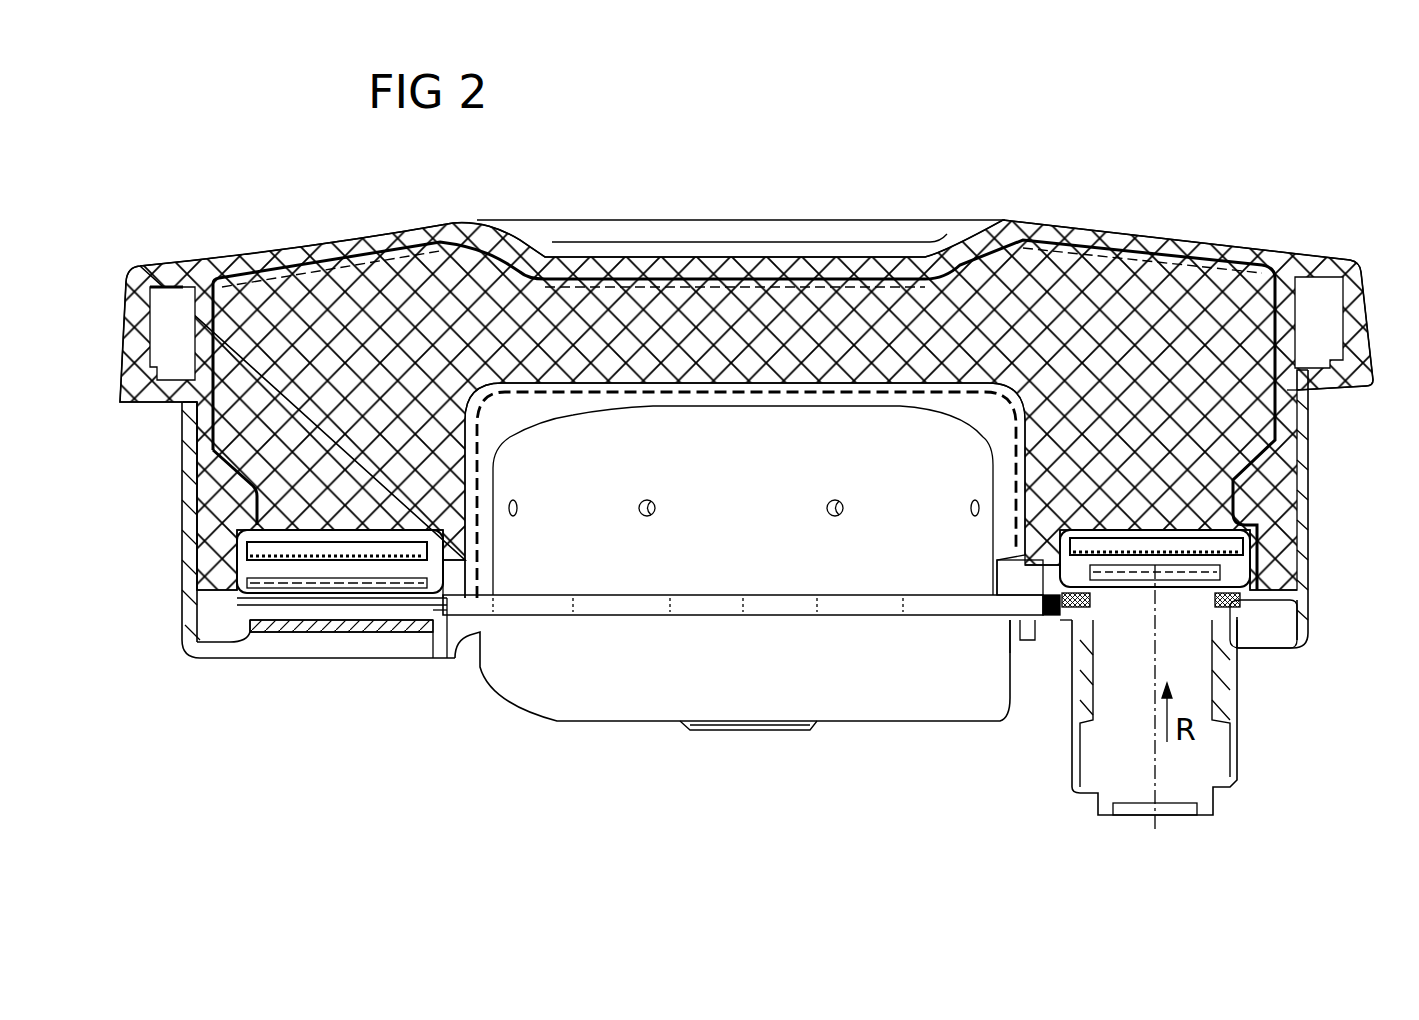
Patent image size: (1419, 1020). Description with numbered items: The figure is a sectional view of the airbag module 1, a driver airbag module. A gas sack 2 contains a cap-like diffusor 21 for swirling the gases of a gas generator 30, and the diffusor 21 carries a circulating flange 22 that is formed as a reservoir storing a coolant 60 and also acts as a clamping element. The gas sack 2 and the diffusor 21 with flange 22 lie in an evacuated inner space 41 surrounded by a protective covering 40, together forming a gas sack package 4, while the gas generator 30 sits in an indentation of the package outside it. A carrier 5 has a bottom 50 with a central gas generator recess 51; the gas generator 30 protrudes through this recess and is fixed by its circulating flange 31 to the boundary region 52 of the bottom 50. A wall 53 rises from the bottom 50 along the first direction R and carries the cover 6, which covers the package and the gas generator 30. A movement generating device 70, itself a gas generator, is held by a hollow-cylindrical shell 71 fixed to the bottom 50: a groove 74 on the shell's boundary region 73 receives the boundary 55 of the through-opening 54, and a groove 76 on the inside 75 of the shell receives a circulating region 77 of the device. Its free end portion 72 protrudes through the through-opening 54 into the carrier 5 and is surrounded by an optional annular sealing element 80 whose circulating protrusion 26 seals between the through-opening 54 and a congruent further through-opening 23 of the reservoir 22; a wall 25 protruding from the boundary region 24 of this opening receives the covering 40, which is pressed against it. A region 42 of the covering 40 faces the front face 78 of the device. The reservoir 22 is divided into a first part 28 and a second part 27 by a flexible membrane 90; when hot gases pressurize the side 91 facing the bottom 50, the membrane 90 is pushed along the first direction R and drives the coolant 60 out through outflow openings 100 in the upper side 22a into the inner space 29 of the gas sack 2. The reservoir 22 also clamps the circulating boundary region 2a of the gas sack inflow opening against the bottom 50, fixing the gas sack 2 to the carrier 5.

The airbag module 1 is at (317, 740).
The gas sack 2 is at (267, 527).
The circulating boundary region of the inflow opening of the gas sack 2a is at (292, 593).
The gas sack package 4 is at (1115, 247).
The carrier 5 is at (1283, 647).
The cover 6 is at (1218, 313).
The diffusor 21 is at (733, 530).
The circulating flange (reservoir / clamping element) 22 is at (1073, 467).
The upper side of the reservoir 22a is at (1240, 560).
The further through-opening 23 is at (1257, 515).
The boundary region of the further through-opening 24 is at (1040, 557).
The wall 25 is at (1040, 520).
The circulating protrusion 26 is at (1013, 623).
The second part of the reservoir 27 is at (1258, 490).
The first part of the reservoir 28 is at (1253, 585).
The inner space of the gas sack 29 is at (1218, 555).
The gas generator 30 is at (561, 575).
The circulating flange of the gas generator 31 is at (460, 607).
The protective covering 40 is at (1293, 350).
The inner space of the gas sack package 41 is at (1010, 313).
The region of the protective covering 42 is at (1143, 537).
The bottom of the carrier 50 is at (350, 625).
The gas generator recess 51 is at (501, 645).
The boundary region of the bottom 52 is at (437, 620).
The wall of the carrier 53 is at (1297, 557).
The through-opening of the bottom 54 is at (1066, 785).
The boundary of the bottom delimiting the through-opening 55 is at (1242, 617).
The coolant (cooling liquid) 60 is at (1170, 540).
The movement generating device 70 is at (1217, 763).
The shell 71 is at (1222, 707).
The free end portion 72 is at (1114, 630).
The boundary region of the shell 73 is at (1228, 637).
The groove 74 is at (1205, 615).
The inside of the shell 75 is at (1093, 700).
The groove 76 is at (1073, 795).
The circulating region 77 is at (1093, 772).
The front face 78 is at (1137, 580).
The sealing element 80 is at (1247, 598).
The movable element (membrane) 90 is at (1230, 563).
The side of the membrane 91 is at (1077, 612).
The outflow opening 100 is at (1117, 533).